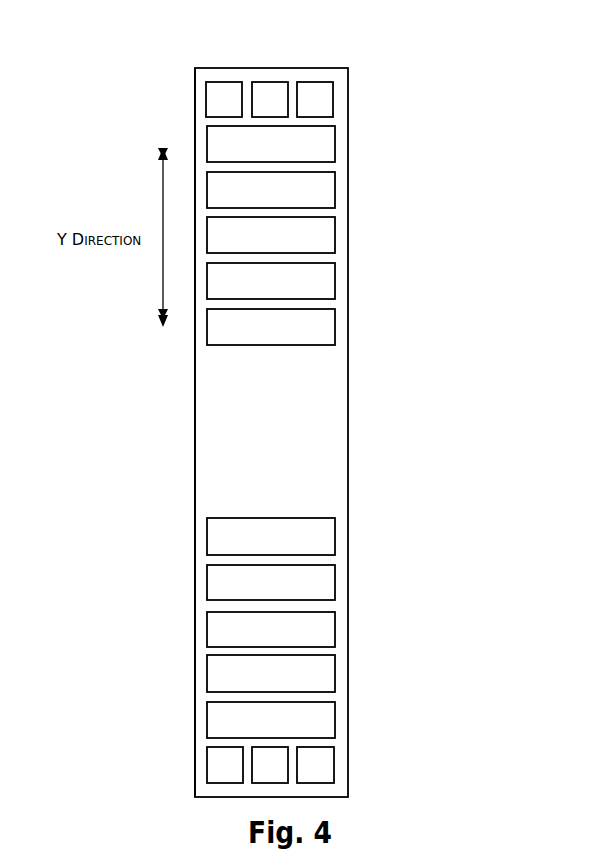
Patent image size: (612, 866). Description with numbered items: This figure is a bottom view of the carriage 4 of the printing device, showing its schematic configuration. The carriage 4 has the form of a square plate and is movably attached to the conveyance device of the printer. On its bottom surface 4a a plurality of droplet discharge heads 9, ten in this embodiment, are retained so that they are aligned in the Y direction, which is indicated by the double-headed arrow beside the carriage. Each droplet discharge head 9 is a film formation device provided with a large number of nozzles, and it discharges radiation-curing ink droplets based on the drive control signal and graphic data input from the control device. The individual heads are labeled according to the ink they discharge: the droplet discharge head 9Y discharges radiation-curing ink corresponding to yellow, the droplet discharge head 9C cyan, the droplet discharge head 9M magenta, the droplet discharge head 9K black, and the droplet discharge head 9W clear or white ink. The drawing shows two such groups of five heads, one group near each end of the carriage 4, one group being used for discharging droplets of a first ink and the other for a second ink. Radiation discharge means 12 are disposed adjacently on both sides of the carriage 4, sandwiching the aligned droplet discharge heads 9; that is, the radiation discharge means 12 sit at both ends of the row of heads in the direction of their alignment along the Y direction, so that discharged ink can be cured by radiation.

The carriage 4 is at (265, 68).
The bottom surface 4a is at (202, 97).
The radiation discharge means 12 is at (333, 93).
The droplet discharge heads 9 is at (339, 430).
The droplet discharge head (yellow) 9Y is at (335, 145).
The droplet discharge head (cyan) 9C is at (335, 191).
The droplet discharge head (magenta) 9M is at (335, 235).
The droplet discharge head (black) 9K is at (335, 280).
The droplet discharge head (white/clear) 9W is at (335, 325).